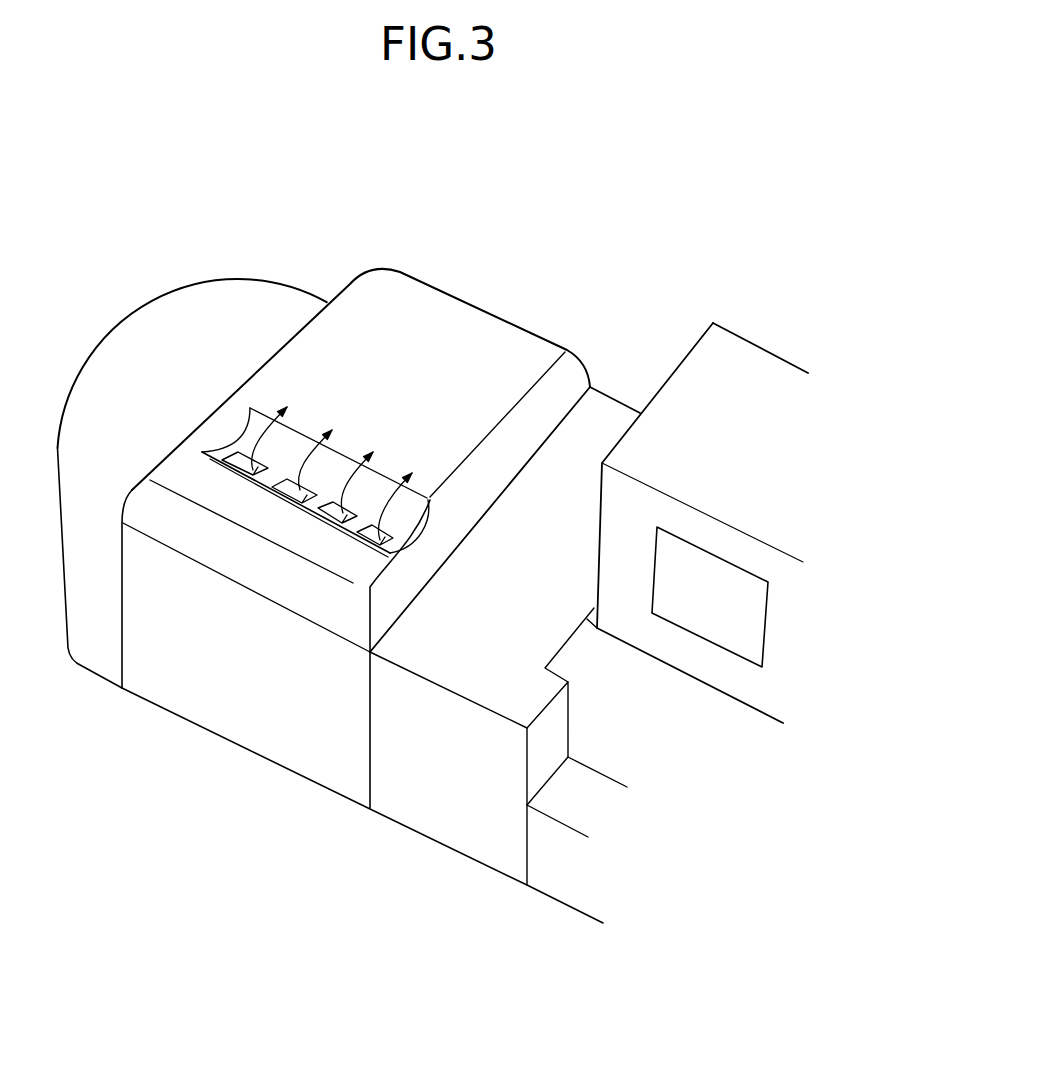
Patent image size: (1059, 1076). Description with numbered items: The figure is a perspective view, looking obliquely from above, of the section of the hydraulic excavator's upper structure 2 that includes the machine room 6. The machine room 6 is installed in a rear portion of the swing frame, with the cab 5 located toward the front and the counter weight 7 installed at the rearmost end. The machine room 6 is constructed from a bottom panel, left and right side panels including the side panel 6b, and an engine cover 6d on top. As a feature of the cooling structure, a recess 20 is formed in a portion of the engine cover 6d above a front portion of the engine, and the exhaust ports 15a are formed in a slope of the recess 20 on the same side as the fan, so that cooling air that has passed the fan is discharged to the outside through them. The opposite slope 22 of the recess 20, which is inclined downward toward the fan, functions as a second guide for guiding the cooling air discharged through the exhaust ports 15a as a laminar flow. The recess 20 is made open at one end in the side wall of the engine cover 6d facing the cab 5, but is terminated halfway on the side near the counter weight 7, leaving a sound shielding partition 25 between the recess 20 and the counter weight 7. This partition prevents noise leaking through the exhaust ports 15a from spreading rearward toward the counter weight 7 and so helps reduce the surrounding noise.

The upper structure 2 is at (556, 318).
The cab 5 is at (725, 357).
The machine room 6 is at (165, 445).
The side panel 6b is at (267, 722).
The engine cover 6d is at (367, 293).
The counter weight 7 is at (170, 327).
The exhaust ports 15a is at (252, 468).
The recess 20 is at (413, 532).
The opposite slope 22 is at (378, 487).
The sound shielding partition 25 is at (240, 433).